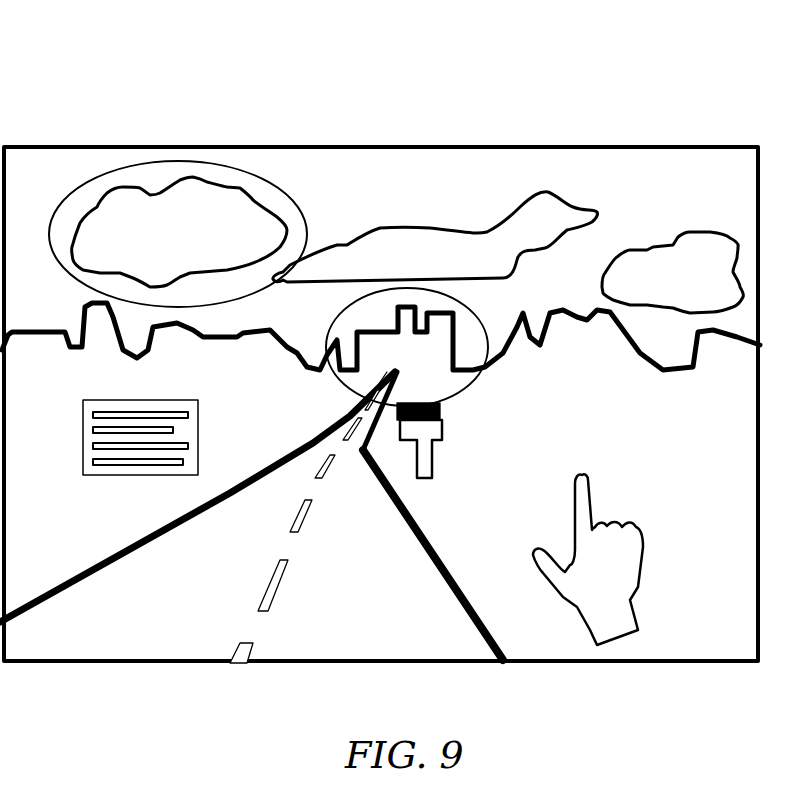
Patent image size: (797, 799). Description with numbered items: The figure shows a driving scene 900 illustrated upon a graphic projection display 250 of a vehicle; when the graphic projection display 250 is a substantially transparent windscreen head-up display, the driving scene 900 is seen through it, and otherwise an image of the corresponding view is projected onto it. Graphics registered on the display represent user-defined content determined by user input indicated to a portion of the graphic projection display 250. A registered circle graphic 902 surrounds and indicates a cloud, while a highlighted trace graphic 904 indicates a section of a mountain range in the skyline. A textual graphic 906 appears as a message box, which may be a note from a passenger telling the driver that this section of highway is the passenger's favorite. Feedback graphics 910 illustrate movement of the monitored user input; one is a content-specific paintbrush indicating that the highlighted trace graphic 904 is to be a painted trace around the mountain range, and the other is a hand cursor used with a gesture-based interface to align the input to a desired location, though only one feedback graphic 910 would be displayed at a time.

The driving scene 900 is at (120, 85).
The graphic projection display 250 is at (453, 145).
The registered circle graphic 902 is at (213, 163).
The highlighted trace graphic 904 is at (455, 393).
The textual graphic 906 is at (198, 431).
The feedback graphic 910 is at (437, 453).